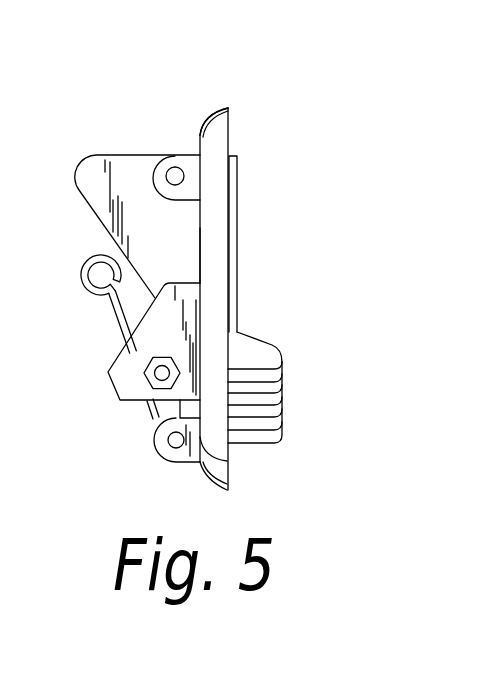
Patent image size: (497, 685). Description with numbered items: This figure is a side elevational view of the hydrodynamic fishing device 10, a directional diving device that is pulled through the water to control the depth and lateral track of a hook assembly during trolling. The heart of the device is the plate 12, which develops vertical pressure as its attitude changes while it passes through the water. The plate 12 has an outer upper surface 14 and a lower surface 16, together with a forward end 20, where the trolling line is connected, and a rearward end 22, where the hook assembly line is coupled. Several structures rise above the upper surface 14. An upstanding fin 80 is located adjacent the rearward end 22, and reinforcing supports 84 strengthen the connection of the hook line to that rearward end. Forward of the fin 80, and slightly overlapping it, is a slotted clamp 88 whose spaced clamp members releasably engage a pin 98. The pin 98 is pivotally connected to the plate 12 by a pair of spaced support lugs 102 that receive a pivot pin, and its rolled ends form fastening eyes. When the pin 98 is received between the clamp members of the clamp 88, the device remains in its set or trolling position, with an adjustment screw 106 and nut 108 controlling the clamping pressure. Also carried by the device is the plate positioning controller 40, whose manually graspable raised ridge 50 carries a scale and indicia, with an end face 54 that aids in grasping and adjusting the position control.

The hydrodynamic fishing device 10 is at (115, 131).
The plate 12 is at (227, 270).
The upper surface 14 is at (200, 229).
The lower surface 16 is at (230, 136).
The forward end 20 is at (215, 483).
The rearward end 22 is at (229, 108).
The plate positioning controller 40 is at (237, 270).
The raised ridge 50 is at (288, 362).
The end face 54 is at (263, 352).
The upstanding fin 80 is at (105, 208).
The reinforcing supports 84 is at (172, 156).
The slotted clamp 88 is at (113, 313).
The pin 98 is at (139, 468).
The support lugs 102 is at (176, 447).
The adjustment screw 106 is at (160, 377).
The nut 108 is at (125, 352).